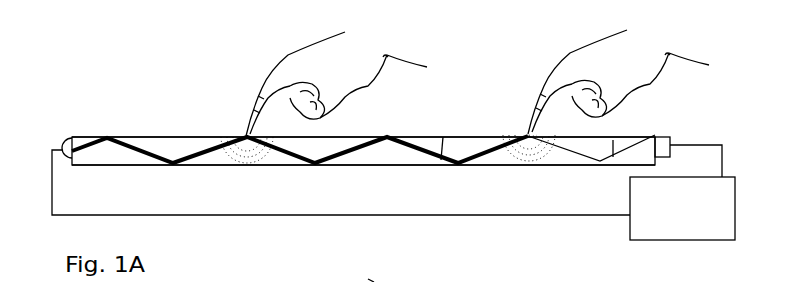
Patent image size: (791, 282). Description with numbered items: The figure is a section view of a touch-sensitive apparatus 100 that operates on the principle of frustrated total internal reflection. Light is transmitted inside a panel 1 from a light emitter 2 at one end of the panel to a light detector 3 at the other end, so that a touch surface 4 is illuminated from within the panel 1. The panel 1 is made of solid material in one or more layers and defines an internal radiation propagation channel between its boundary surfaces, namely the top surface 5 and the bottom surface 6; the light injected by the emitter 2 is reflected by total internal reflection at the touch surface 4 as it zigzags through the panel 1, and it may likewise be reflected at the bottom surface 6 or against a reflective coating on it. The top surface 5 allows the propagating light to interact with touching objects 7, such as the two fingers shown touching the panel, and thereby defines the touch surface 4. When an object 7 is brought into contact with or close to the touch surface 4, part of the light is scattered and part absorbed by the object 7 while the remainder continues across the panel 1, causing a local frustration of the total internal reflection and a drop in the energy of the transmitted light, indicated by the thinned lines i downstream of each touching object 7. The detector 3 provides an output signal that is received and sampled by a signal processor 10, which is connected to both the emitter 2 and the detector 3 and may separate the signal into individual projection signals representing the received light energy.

The touch-sensitive apparatus 100 is at (126, 106).
The panel 1 is at (183, 140).
The light emitter 2 is at (70, 137).
The light detector 3 is at (663, 140).
The touch surface 4 is at (427, 137).
The top surface 5 is at (212, 137).
The bottom surface 6 is at (203, 165).
The touching object 7 is at (288, 55).
The signal processor 10 is at (630, 238).
The thinned lines i is at (443, 137).